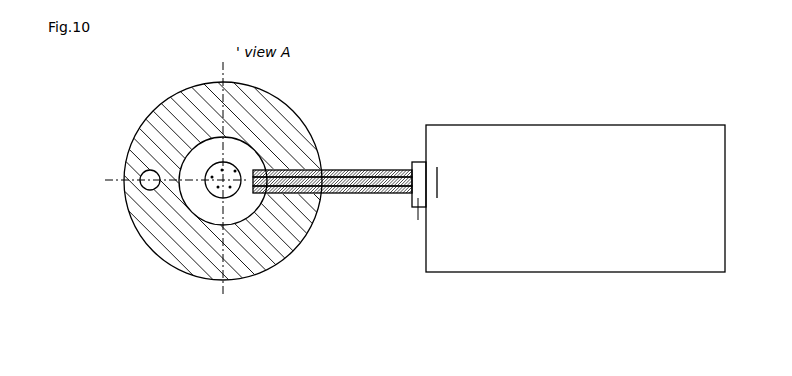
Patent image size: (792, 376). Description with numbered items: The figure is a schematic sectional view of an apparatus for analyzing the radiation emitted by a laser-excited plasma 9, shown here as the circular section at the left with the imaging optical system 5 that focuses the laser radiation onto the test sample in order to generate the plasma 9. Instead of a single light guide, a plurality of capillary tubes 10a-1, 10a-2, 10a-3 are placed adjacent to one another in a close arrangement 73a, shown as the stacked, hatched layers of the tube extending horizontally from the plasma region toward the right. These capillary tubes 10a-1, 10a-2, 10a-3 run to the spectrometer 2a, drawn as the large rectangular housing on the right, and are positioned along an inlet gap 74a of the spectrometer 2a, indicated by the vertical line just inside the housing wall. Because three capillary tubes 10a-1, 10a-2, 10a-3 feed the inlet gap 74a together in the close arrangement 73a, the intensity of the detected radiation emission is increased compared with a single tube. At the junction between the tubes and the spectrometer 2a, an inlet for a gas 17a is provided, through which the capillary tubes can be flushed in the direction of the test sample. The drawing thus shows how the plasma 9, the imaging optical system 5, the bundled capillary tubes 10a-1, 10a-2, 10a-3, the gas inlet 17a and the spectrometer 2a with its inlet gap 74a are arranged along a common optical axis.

The plasma 9 is at (173, 100).
The imaging optical system 5 is at (180, 153).
The capillary tube 10a-1 is at (330, 171).
The capillary tube 10a-2 is at (336, 178).
The capillary tube 10a-3 is at (341, 186).
The close arrangement 73a is at (340, 194).
The inlet for a gas 17a is at (418, 213).
The spectrometer 2a is at (538, 133).
The inlet gap 74a is at (437, 187).